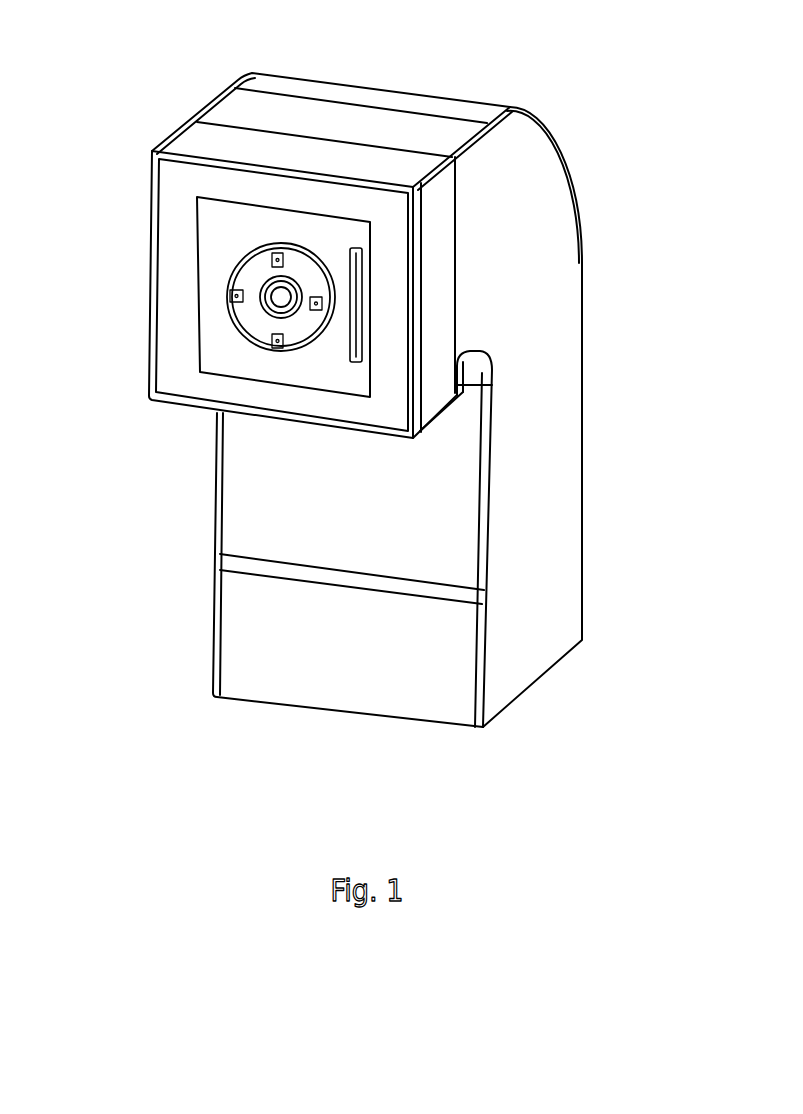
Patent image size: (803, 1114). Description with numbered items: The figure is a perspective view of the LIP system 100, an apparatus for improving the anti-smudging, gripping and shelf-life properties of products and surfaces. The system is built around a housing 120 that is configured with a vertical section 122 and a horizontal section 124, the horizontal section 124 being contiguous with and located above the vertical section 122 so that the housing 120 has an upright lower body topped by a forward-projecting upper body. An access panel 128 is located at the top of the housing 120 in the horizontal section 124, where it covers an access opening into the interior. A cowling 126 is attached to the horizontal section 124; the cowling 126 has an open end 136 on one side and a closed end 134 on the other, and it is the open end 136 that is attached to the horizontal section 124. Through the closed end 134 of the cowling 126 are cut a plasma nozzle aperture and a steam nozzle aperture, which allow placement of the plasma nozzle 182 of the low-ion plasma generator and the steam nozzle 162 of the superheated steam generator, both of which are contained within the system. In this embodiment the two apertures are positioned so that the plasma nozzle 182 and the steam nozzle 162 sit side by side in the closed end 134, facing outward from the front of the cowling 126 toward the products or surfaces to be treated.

The LIP system 100 is at (240, 703).
The housing 120 is at (567, 350).
The vertical section 122 is at (502, 565).
The horizontal section 124 is at (477, 193).
The cowling 126 is at (195, 117).
The access panel 128 is at (350, 100).
The closed end 134 is at (165, 232).
The open end 136 is at (458, 272).
The steam nozzle 162 is at (365, 325).
The plasma nozzle 182 is at (227, 317).